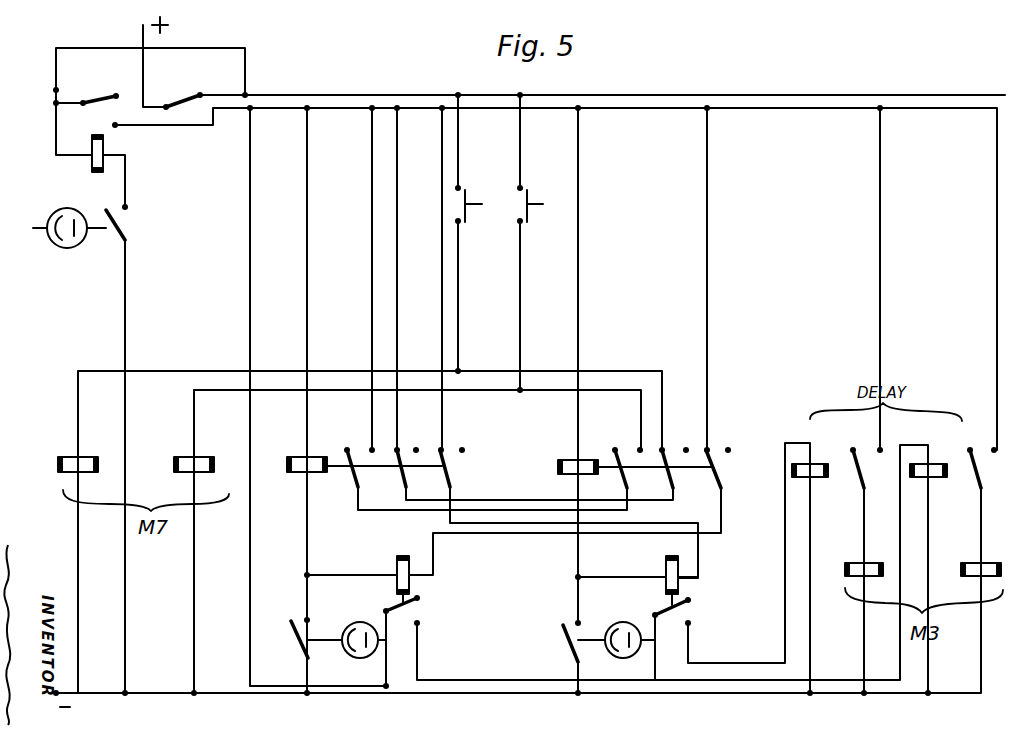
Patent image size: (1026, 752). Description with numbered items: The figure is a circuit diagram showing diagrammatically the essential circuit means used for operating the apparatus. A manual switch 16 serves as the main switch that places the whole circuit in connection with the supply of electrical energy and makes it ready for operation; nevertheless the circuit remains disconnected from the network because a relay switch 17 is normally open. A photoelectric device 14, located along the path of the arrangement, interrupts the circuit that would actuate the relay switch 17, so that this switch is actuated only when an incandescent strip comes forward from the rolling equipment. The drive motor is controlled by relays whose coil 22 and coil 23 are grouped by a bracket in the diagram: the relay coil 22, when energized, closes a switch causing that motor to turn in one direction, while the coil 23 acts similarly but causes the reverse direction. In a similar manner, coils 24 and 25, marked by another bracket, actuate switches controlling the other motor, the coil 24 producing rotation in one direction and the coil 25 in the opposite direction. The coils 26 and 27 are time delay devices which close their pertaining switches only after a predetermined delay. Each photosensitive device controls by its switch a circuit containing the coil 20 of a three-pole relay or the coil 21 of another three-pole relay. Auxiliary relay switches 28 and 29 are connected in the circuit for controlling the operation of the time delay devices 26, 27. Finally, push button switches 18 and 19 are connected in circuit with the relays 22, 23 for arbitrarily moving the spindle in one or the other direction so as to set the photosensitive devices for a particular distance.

The photoelectric device 14 is at (56, 248).
The manual switch 16 is at (177, 95).
The relay switch 17 is at (90, 160).
The push button switch 18 is at (469, 198).
The push button switch 19 is at (531, 198).
The coil of three-pole relay 20 is at (312, 455).
The coil of three-pole relay 21 is at (583, 459).
The relay coil 22 is at (86, 456).
The relay coil 23 is at (203, 457).
The relay coil 24 is at (864, 567).
The relay coil 25 is at (984, 567).
The time delay device coil 26 is at (812, 465).
The time delay device coil 27 is at (933, 465).
The auxiliary relay switch 28 is at (395, 563).
The auxiliary relay switch 29 is at (665, 571).